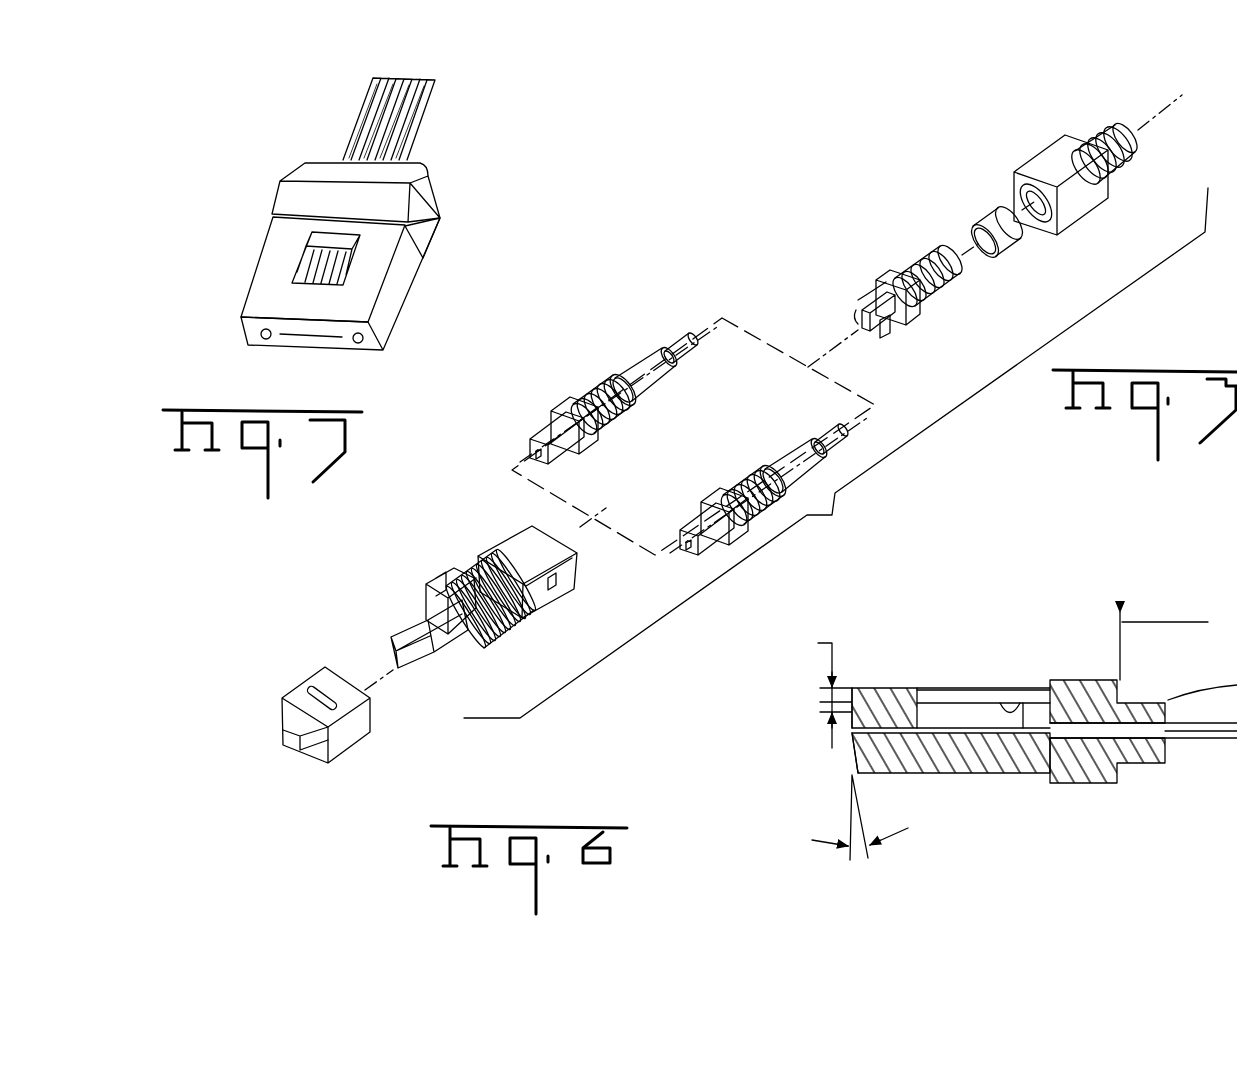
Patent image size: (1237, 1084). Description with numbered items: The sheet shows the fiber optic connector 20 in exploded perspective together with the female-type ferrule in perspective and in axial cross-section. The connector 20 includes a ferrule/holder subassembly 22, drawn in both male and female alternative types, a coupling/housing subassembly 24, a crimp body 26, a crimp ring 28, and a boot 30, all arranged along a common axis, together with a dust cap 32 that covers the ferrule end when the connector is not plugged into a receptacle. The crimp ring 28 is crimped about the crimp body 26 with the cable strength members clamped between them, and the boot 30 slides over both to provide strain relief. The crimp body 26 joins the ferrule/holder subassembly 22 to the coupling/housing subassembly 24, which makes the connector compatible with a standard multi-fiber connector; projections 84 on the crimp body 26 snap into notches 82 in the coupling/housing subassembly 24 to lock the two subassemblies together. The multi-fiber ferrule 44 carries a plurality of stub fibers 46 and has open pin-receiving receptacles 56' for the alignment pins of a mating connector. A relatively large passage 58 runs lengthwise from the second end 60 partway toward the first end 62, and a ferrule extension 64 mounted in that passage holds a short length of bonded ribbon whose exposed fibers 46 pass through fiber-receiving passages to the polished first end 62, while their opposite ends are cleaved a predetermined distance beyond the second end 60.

In FIG. 6, the connector 20 is at (786, 406).
In FIG. 6, the ferrule/holder subassembly 22 is at (595, 362).
In FIG. 6, the coupling/housing subassembly 24 is at (468, 548).
In FIG. 6, the crimp body 26 is at (885, 275).
In FIG. 6, the crimp ring 28 is at (1000, 212).
In FIG. 6, the boot 30 is at (1075, 130).
In FIG. 6, the dust cap 32 is at (295, 695).
In FIG. 5, the multi-fiber ferrule 44 is at (395, 296).
In FIG. 3, the multi-fiber ferrule 44 is at (875, 690).
In FIG. 5, the stub fibers 46 is at (432, 120).
In FIG. 3, the stub fibers 46 is at (1000, 725).
In FIG. 5, the pin-receiving receptacles 56' is at (246, 360).
In FIG. 3, the passage 58 is at (1005, 710).
In FIG. 3, the second end 60 is at (1124, 688).
In FIG. 5, the first end 62 is at (374, 361).
In FIG. 3, the first end 62 is at (852, 730).
In FIG. 5, the ferrule extension 64 is at (330, 168).
In FIG. 6, the notches 82 is at (560, 585).
In FIG. 6, the projections 84 is at (925, 315).